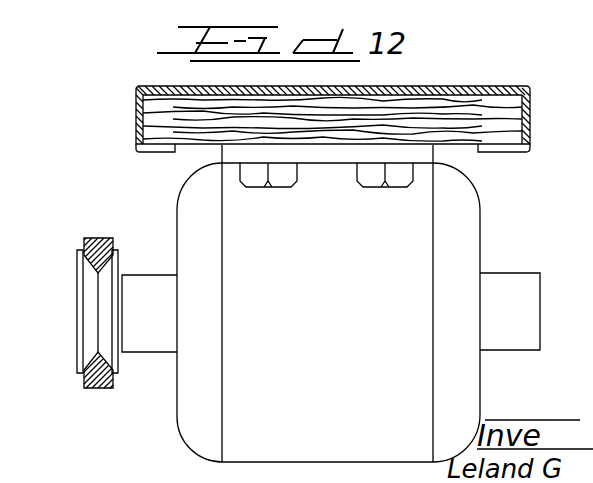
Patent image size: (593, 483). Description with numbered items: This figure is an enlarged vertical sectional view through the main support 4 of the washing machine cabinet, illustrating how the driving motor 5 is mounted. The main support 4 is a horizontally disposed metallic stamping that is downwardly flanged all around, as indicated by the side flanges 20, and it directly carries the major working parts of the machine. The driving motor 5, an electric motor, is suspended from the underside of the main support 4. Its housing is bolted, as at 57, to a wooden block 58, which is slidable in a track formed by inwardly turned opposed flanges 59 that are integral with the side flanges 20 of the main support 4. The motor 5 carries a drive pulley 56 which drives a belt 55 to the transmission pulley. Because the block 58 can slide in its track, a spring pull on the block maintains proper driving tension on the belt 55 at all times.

The main support 4 is at (433, 90).
The wooden block 58 is at (473, 112).
The side flanges 20 is at (526, 112).
The inwardly turned opposed flanges 59 is at (500, 153).
The bolts 57 is at (372, 172).
The driving motor 5 is at (331, 303).
The belt 55 is at (110, 240).
The drive pulley 56 is at (95, 308).